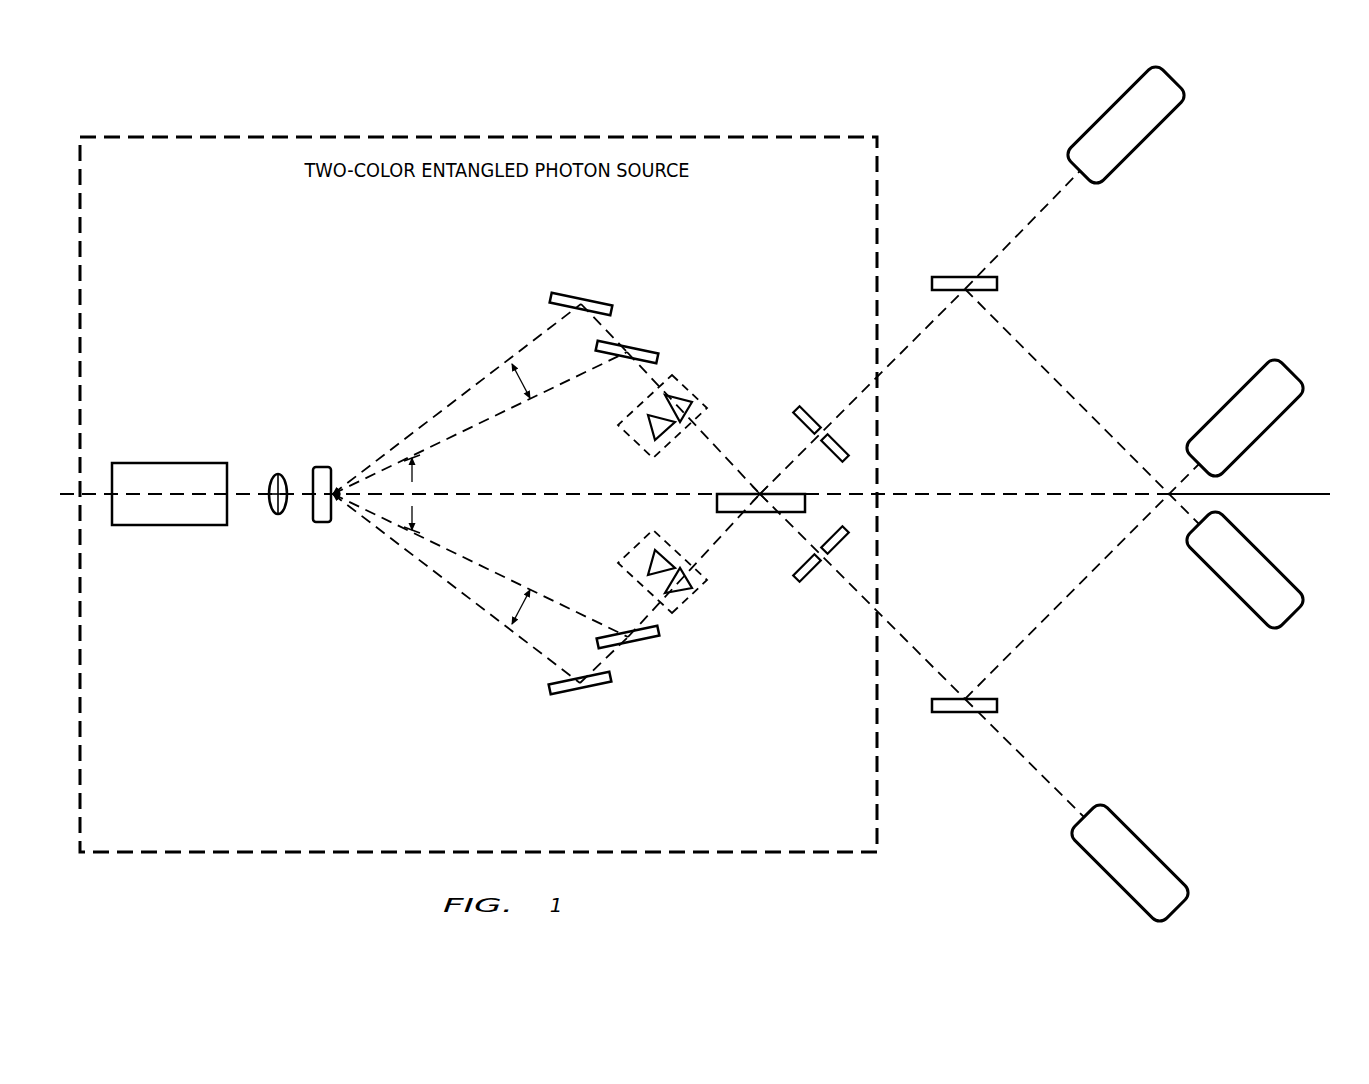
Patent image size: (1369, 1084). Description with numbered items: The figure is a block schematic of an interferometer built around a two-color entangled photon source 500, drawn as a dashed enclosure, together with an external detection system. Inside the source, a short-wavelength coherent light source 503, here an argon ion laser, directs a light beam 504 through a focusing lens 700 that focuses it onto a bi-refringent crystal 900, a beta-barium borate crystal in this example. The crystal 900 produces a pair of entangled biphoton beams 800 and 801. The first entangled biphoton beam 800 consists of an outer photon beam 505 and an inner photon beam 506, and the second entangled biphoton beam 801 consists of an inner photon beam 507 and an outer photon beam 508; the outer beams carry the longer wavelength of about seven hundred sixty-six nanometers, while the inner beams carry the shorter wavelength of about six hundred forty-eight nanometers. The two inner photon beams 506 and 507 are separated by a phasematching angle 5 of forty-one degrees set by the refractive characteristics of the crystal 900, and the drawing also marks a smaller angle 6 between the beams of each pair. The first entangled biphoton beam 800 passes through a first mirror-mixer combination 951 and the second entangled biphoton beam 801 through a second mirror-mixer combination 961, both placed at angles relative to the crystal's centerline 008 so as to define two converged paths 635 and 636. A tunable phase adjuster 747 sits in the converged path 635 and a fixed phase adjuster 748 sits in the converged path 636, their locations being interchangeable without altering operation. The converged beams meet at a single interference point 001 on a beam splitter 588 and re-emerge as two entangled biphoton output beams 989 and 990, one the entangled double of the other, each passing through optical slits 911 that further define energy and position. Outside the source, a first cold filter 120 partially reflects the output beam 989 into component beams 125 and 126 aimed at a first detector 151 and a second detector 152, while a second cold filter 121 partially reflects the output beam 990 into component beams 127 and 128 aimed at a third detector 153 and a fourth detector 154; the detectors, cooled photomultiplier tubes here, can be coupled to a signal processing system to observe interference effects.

The two-color entangled photon source 500 is at (349, 132).
The source of short-wavelength coherent light 503 is at (172, 463).
The light beam 504 is at (269, 484).
The focusing lens 700 is at (278, 514).
The bi-refringent crystal 900 is at (322, 467).
The outer photon beam 505 is at (480, 381).
The inner photon beam 506 is at (460, 433).
The inner photon beam 507 is at (458, 555).
The outer photon beam 508 is at (480, 606).
The first entangled biphoton beam 800 is at (560, 355).
The second entangled biphoton beam 801 is at (560, 635).
The first mirror-mixer combination 951 is at (645, 346).
The mirror and mixer (lower) 961 is at (575, 692).
The converged path 635 is at (632, 362).
The converged path 636 is at (632, 627).
The tunable phase adjuster 747 is at (695, 392).
The fixed phase adjuster 748 is at (635, 548).
The phasematching angle 5 is at (412, 494).
The angle between paths 6 is at (527, 493).
The beam splitter 588 is at (768, 513).
The single interference point 001 is at (761, 489).
The entangled biphoton output beam 989 is at (856, 399).
The entangled biphoton output beam 990 is at (856, 589).
The optical slits 911 is at (838, 442).
The first cold filter 120 is at (953, 277).
The second cold filter 121 is at (957, 712).
The component beam 125 is at (1048, 205).
The component beam 126 is at (1012, 337).
The component beam 127 is at (1012, 652).
The component beam 128 is at (1050, 784).
The first detector 151 is at (1147, 148).
The second detector 152 is at (1298, 608).
The third detector 153 is at (1298, 380).
The fourth detector 154 is at (1147, 845).
The bi-refringent crystal's centerline 008 is at (1282, 493).